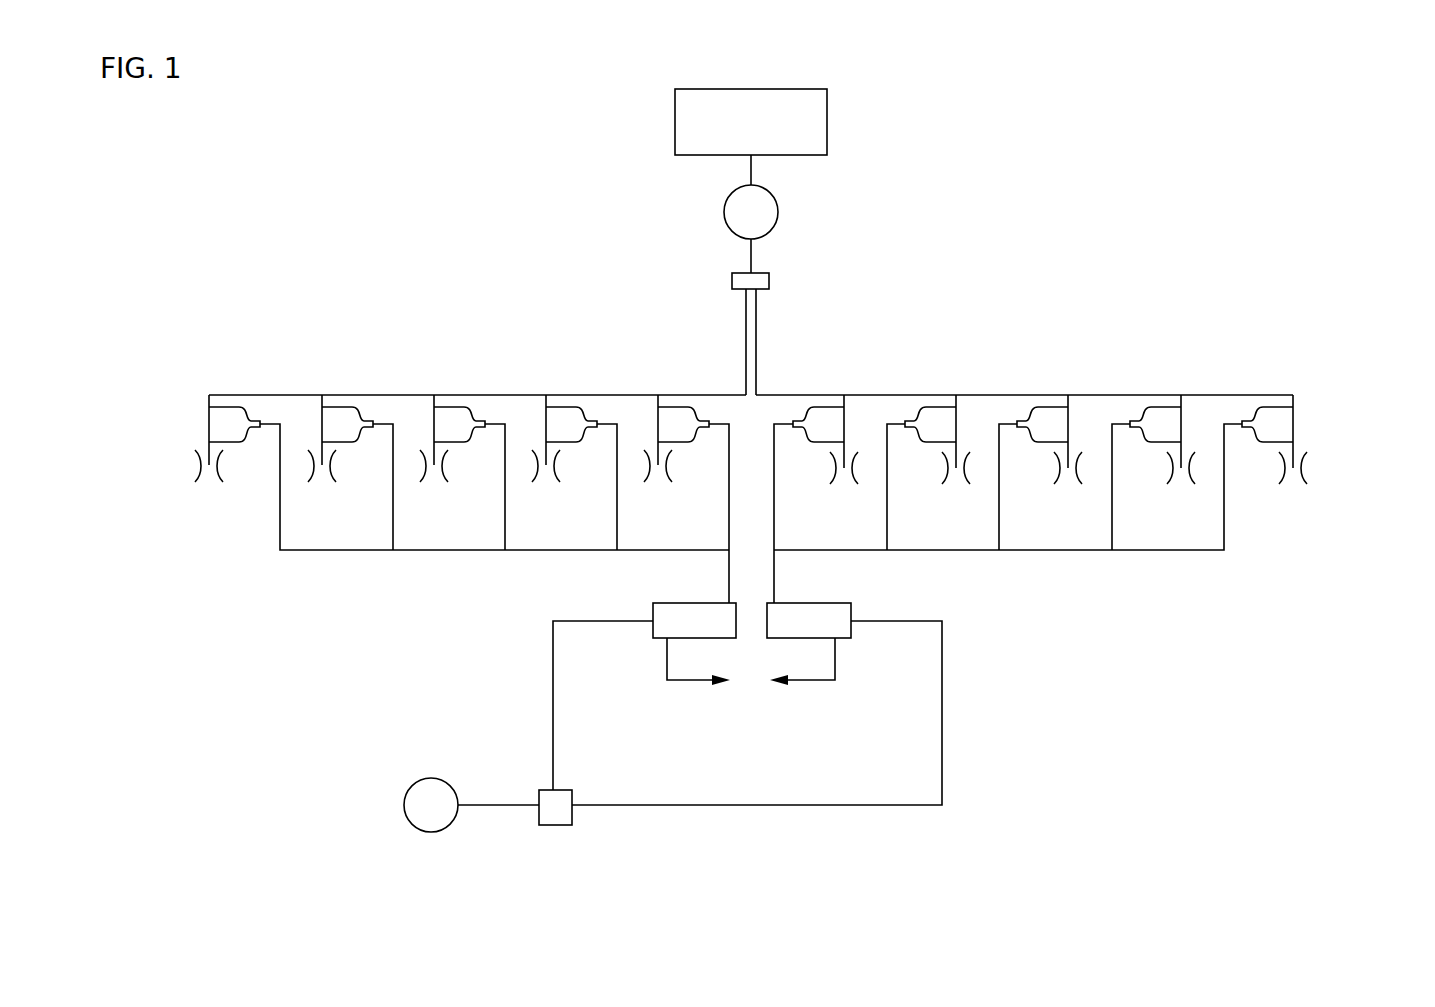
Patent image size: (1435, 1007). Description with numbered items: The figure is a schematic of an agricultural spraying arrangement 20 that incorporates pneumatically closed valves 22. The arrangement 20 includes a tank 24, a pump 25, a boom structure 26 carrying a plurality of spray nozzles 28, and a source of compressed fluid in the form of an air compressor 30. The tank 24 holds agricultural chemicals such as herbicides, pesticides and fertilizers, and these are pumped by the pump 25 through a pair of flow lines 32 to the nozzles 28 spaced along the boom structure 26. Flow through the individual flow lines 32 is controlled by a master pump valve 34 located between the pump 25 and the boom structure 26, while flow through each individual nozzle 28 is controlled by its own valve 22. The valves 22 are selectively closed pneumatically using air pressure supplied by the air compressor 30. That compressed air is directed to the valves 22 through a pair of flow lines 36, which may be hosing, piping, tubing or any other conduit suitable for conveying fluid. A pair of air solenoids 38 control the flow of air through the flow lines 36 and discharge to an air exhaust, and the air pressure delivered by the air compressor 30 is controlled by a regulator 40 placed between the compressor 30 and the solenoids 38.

The agricultural spraying arrangement 20 is at (1109, 254).
The valve 22 is at (209, 422).
The tank 24 is at (827, 111).
The pump 25 is at (778, 209).
The boom structure 26 is at (480, 391).
The spray nozzle 28 is at (196, 477).
The air compressor 30 is at (405, 792).
The flow line 32 is at (746, 334).
The master pump valve 34 is at (732, 277).
The flow line 36 is at (729, 570).
The air solenoid 38 is at (653, 612).
The regulator 40 is at (556, 825).